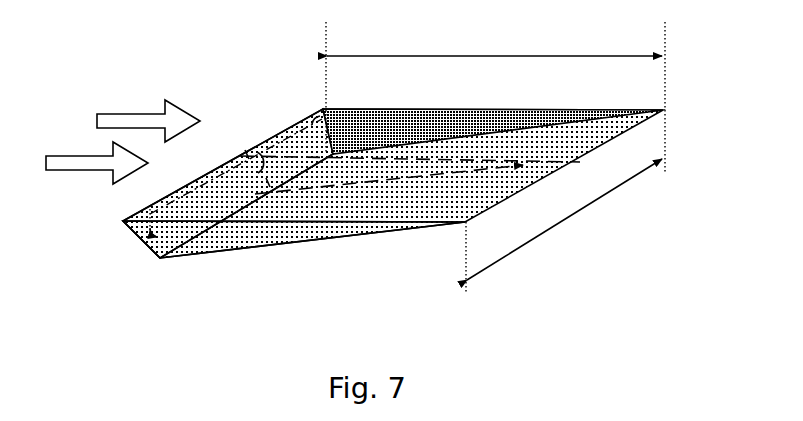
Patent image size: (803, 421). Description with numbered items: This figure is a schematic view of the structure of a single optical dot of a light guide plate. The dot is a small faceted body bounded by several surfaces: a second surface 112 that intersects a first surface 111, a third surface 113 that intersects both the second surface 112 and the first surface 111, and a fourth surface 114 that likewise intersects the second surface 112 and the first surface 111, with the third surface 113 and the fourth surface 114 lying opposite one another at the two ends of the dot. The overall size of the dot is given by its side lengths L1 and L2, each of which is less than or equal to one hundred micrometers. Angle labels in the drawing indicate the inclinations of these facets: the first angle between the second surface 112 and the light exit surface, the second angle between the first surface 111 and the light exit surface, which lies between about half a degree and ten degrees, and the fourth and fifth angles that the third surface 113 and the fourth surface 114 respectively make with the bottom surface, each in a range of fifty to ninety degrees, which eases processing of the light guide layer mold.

The first surface 111 is at (352, 237).
The second surface 112 is at (166, 198).
The third surface 113 is at (200, 245).
The fourth surface 114 is at (398, 109).
The side length L1 is at (494, 46).
The side length L2 is at (564, 219).